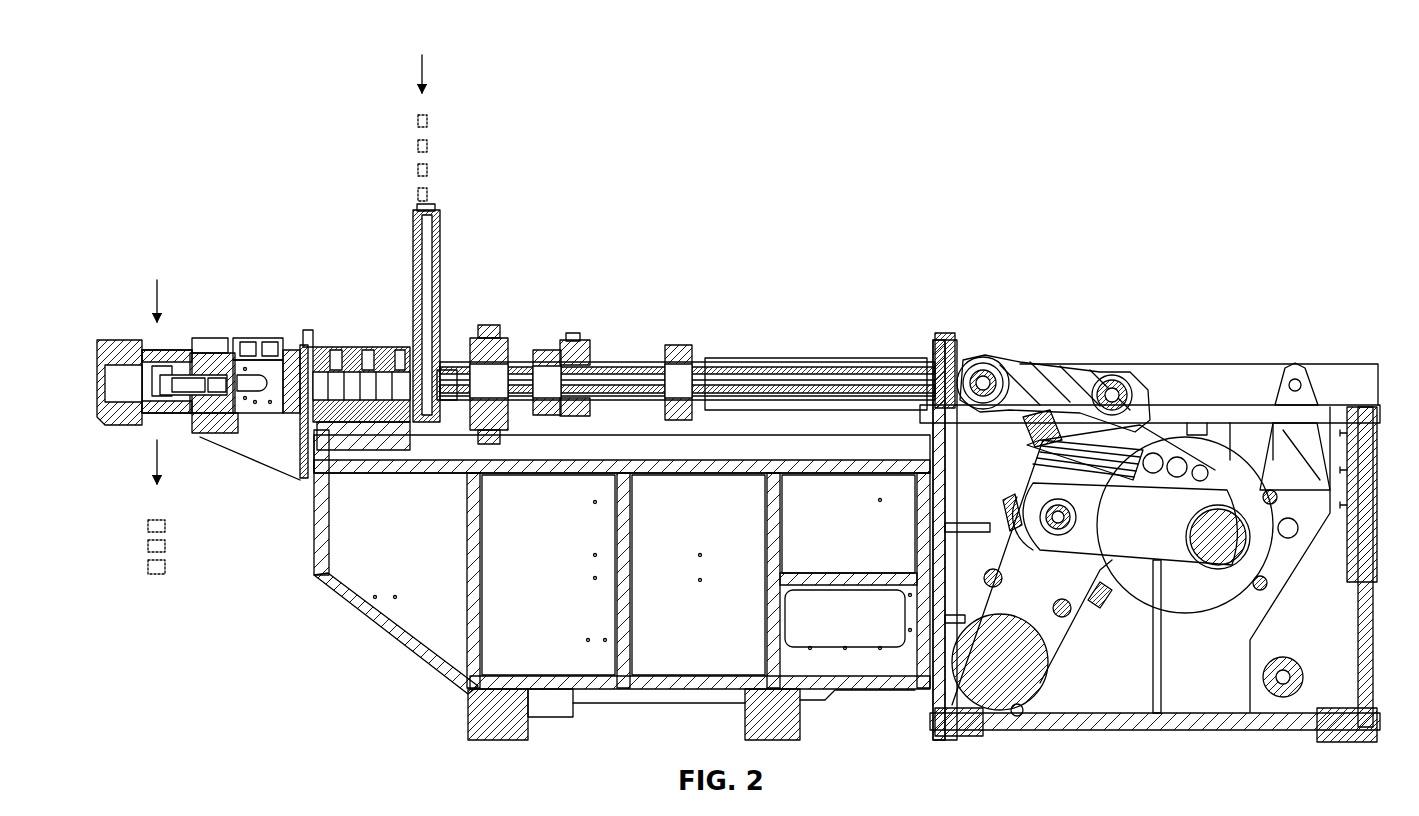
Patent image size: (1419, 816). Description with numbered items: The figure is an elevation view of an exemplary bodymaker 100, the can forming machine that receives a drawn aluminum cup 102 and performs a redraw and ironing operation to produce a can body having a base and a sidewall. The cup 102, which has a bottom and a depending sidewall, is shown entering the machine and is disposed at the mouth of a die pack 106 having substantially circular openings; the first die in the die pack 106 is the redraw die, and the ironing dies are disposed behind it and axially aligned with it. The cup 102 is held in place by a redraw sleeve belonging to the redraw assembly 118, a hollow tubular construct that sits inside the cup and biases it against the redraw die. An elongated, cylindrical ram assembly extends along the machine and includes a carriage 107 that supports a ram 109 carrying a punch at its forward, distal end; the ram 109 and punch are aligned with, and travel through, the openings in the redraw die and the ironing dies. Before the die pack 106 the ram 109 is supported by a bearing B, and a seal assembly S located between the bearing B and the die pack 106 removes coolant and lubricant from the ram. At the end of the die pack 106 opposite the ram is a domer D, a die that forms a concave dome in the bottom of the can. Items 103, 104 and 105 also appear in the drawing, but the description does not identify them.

The bodymaker 100 is at (877, 288).
The cup 102 is at (440, 150).
The feed arrow 103 is at (135, 500).
The workpiece segment 104 is at (142, 572).
The workpiece segment 105 is at (168, 580).
The die pack 106 is at (375, 347).
The carriage 107 is at (820, 365).
The ram 109 is at (652, 358).
The redraw assembly 118 is at (430, 482).
The domer D is at (158, 285).
The seal assembly S is at (493, 322).
The bearing B is at (566, 333).